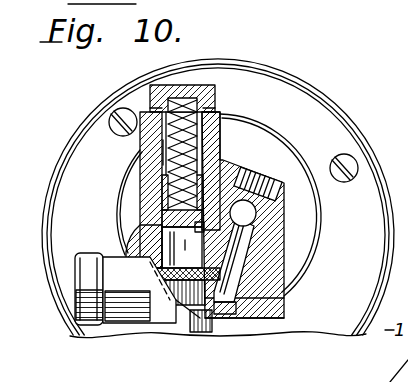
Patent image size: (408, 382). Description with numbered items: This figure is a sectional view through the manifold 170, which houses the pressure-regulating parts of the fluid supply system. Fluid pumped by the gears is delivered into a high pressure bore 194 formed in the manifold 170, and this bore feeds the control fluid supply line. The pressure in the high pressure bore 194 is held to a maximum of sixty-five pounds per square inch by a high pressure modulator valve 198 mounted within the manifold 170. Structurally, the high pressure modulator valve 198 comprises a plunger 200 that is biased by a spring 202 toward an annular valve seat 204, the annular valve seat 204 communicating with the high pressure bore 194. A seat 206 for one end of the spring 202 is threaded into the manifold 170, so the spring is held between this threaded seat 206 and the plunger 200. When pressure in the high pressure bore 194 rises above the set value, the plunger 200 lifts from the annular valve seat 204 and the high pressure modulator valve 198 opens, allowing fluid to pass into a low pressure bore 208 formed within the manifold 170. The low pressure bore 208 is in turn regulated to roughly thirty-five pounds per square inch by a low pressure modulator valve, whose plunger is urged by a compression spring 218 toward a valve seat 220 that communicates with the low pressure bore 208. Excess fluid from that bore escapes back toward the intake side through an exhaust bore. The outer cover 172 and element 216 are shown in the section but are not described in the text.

The manifold 170 is at (283, 308).
The outer rim / cover 172 is at (260, 92).
The high pressure bore 194 is at (264, 219).
The high pressure modulator valve 198 is at (192, 320).
The plunger 200 is at (218, 322).
The spring 202 is at (170, 295).
The annular valve seat 204 is at (226, 318).
The seat 206 is at (89, 253).
The low pressure bore 208 is at (200, 245).
The angled plug screw 216 is at (236, 163).
The compression spring 218 is at (222, 140).
The valve seat 220 is at (150, 250).